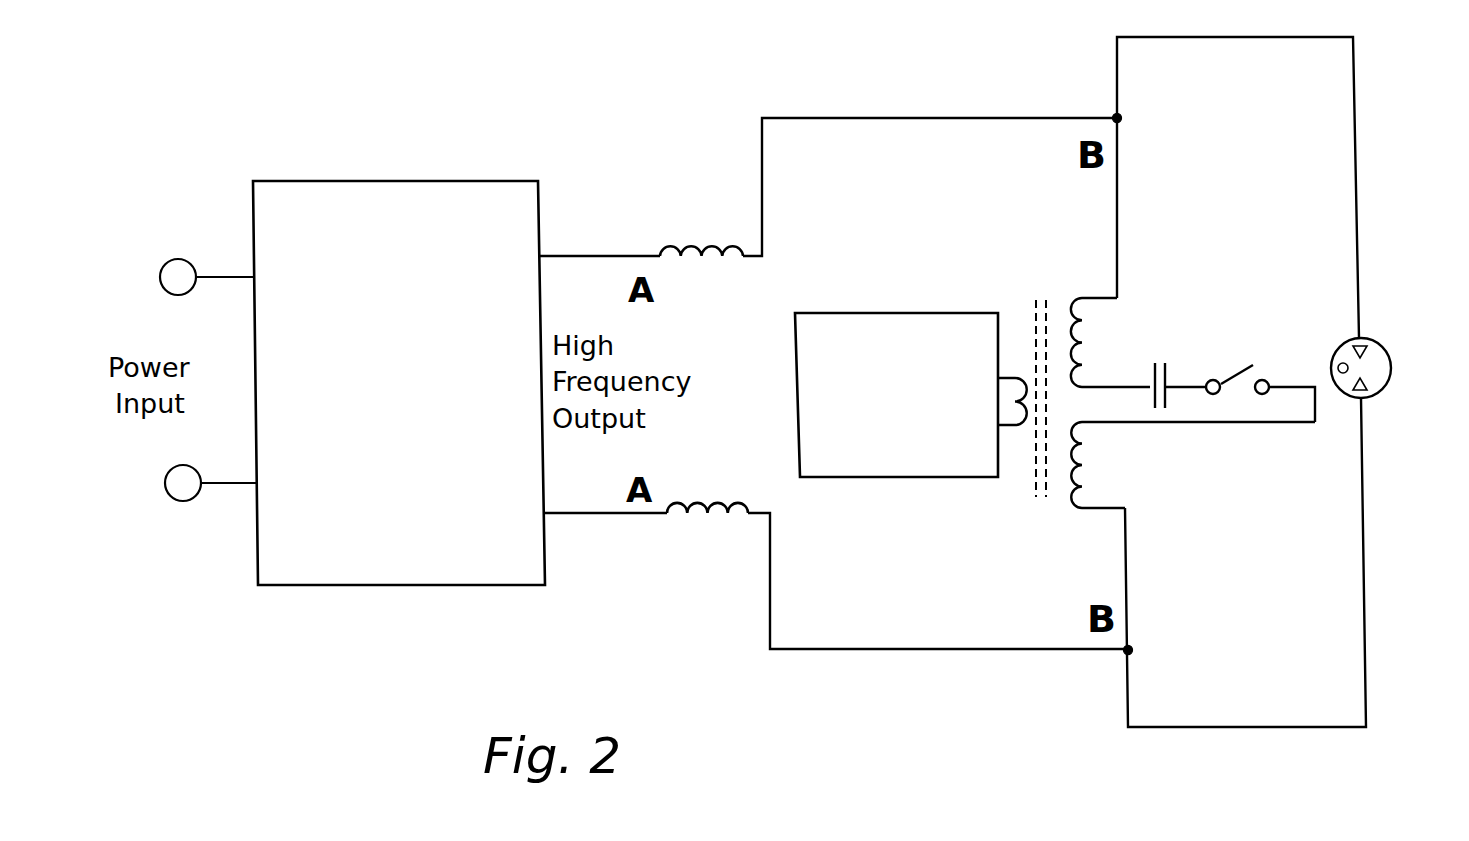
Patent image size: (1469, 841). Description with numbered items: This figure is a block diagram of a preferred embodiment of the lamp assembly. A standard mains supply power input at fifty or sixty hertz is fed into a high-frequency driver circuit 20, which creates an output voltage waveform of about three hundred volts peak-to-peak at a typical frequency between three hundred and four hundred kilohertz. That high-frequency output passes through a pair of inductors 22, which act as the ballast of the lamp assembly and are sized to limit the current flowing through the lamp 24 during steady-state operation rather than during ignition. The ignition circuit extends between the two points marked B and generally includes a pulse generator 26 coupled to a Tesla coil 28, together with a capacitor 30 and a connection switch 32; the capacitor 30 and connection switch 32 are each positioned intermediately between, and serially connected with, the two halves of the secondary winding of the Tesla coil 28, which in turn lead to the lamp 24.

The high-frequency driver circuit 20 is at (452, 181).
The inductors 22 is at (695, 228).
The lamp 24 is at (1392, 355).
The pulse generator 26 is at (897, 313).
The Tesla coil 28 is at (1036, 262).
The capacitor 30 is at (1170, 336).
The connection switch 32 is at (1268, 350).